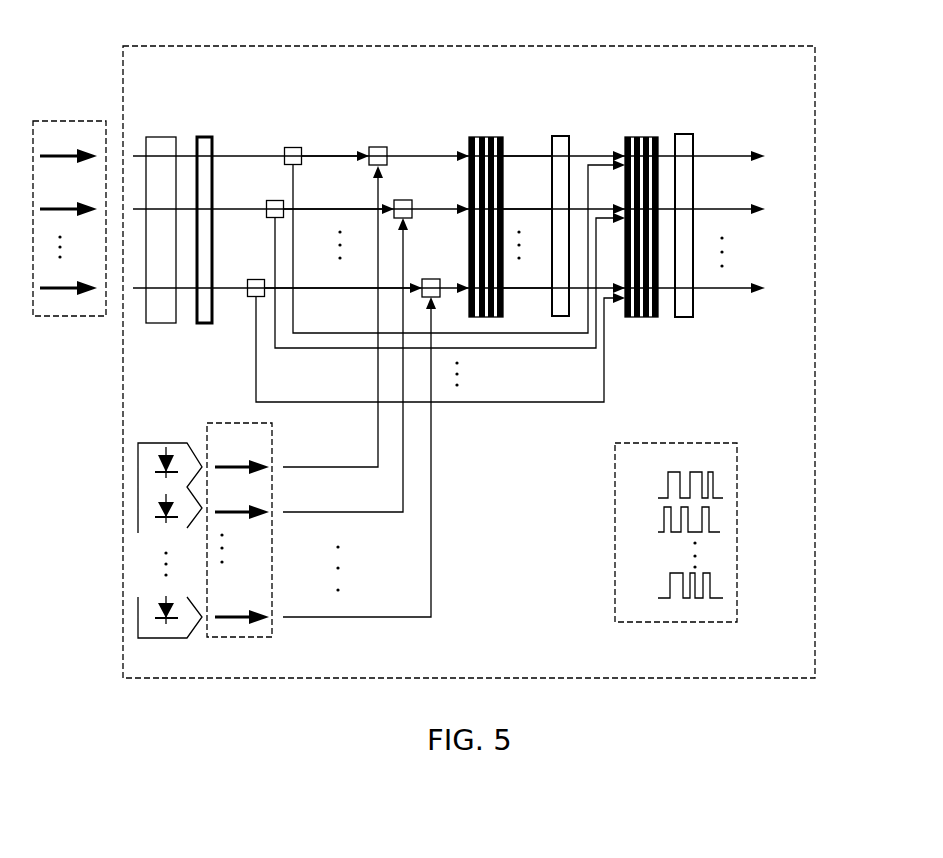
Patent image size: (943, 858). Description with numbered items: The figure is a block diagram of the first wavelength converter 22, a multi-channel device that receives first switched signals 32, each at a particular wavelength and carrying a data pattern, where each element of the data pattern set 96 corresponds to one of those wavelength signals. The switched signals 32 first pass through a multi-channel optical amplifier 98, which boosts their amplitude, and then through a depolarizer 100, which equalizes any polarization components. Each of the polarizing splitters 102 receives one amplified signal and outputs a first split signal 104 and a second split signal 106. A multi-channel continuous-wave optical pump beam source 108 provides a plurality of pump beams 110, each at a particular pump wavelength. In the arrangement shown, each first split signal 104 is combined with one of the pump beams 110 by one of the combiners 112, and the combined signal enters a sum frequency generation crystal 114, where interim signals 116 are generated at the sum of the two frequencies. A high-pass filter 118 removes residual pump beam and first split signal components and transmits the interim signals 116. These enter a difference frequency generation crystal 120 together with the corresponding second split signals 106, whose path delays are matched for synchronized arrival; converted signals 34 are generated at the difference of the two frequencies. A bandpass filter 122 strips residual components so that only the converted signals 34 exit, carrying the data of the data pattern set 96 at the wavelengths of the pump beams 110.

The first wavelength converter 22 is at (543, 42).
The first switched signals 32 is at (88, 118).
The converted signals 34 is at (708, 288).
The data pattern set 96 is at (658, 443).
The multi-channel optical amplifier 98 is at (158, 137).
The depolarizer 100 is at (212, 136).
The polarizing splitters 102 is at (285, 165).
The first split signals 104 is at (346, 150).
The second split signals 106 is at (518, 334).
The multi-channel continuous-wave optical pump beam source 108 is at (180, 452).
The pump beams 110 is at (245, 638).
The combiners 112 is at (378, 146).
The sum frequency generation crystal 114 is at (466, 137).
The interim signals 116 is at (535, 287).
The high-pass filter 118 is at (563, 136).
The difference frequency generation crystal 120 is at (652, 136).
The bandpass filter 122 is at (680, 134).